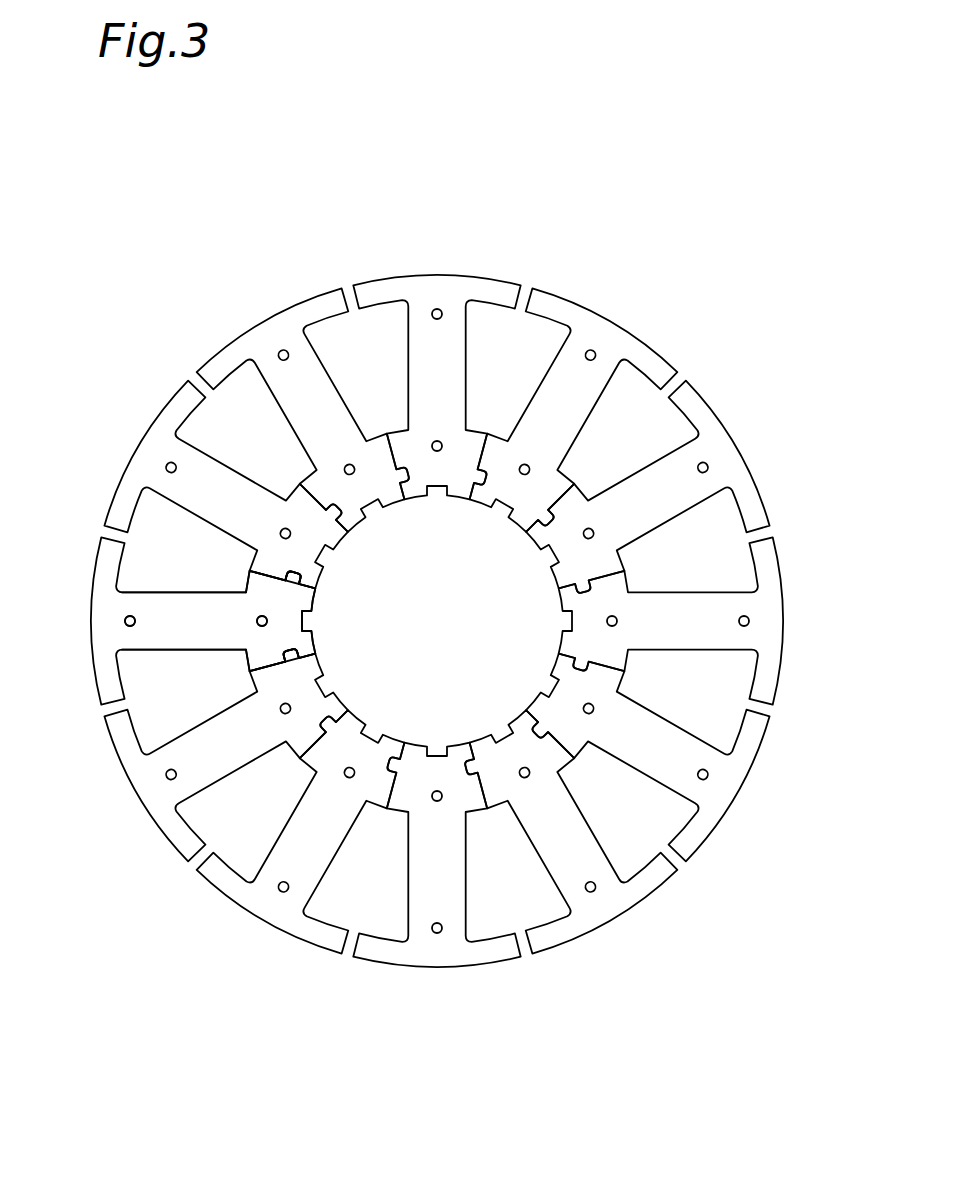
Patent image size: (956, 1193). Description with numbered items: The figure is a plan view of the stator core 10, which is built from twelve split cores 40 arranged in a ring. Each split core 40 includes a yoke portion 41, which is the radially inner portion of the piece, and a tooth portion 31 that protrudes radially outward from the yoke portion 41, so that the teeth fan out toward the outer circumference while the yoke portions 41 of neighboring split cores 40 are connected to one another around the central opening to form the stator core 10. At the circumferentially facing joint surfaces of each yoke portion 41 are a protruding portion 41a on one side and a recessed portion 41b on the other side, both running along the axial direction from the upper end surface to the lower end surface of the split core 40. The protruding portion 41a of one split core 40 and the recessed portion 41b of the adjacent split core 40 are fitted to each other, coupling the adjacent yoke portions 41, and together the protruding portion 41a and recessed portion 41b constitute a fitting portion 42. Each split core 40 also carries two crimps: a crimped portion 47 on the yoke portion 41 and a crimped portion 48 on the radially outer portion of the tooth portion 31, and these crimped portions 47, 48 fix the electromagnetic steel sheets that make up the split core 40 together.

The stator core 10 is at (437, 624).
The split core 40 is at (433, 273).
The tooth portion 31 is at (177, 607).
The yoke portion 41 is at (272, 638).
The protruding portion 41a is at (305, 577).
The recessed portion 41b is at (308, 653).
The fitting portion 42 is at (398, 578).
The crimped portion 47 is at (259, 616).
The crimped portion 48 is at (130, 627).